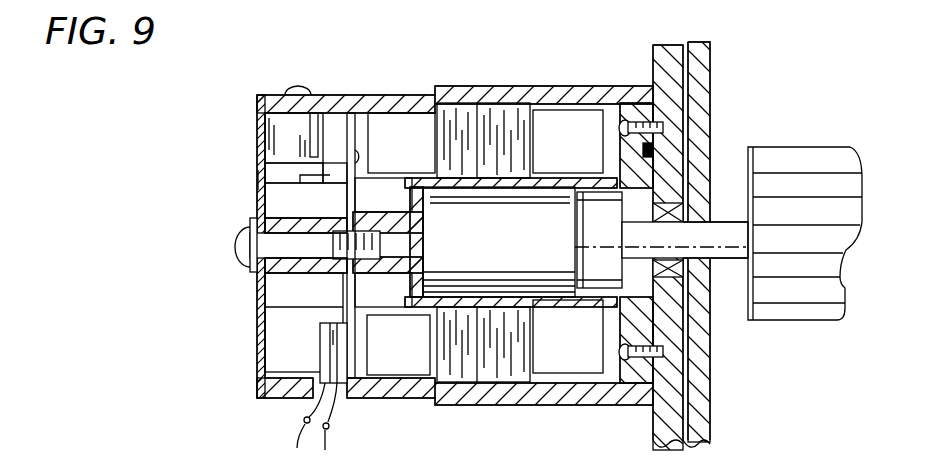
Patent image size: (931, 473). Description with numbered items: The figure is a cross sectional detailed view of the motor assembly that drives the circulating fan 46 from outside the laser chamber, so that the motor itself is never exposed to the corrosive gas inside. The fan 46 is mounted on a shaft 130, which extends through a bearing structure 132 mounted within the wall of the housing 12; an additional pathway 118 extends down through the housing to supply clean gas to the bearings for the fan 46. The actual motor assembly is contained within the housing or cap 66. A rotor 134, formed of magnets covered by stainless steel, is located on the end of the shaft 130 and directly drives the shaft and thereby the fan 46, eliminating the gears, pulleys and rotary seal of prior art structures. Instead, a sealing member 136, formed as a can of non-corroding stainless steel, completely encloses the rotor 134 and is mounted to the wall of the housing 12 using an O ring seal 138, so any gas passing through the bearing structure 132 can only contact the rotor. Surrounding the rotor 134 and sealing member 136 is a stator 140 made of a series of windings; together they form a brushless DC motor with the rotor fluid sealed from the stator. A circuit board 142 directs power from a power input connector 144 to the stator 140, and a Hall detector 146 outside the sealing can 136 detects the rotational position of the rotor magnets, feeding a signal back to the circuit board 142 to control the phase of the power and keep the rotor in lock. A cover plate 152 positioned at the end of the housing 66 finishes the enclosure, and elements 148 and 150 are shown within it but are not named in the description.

The housing 12 is at (712, 50).
The fan 46 is at (794, 147).
The housing or cap 66 is at (364, 88).
The additional pathway 118 is at (712, 80).
The shaft 130 is at (728, 228).
The bearing structure 132 is at (715, 272).
The rotor 134 is at (516, 242).
The sealing member 136 is at (643, 150).
The O ring seal 138 is at (637, 135).
The stator 140 is at (503, 103).
The circuit board 142 is at (345, 290).
The power input connector 144 is at (318, 343).
The Hall detector 146 is at (395, 300).
The switch housing 148 is at (306, 198).
The switch 150 is at (333, 122).
The cover plate 152 is at (253, 180).